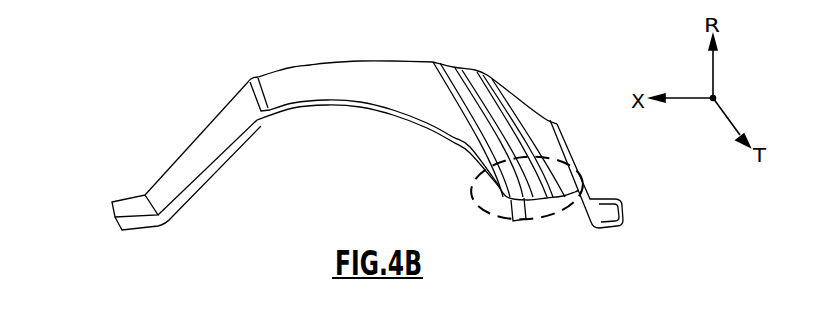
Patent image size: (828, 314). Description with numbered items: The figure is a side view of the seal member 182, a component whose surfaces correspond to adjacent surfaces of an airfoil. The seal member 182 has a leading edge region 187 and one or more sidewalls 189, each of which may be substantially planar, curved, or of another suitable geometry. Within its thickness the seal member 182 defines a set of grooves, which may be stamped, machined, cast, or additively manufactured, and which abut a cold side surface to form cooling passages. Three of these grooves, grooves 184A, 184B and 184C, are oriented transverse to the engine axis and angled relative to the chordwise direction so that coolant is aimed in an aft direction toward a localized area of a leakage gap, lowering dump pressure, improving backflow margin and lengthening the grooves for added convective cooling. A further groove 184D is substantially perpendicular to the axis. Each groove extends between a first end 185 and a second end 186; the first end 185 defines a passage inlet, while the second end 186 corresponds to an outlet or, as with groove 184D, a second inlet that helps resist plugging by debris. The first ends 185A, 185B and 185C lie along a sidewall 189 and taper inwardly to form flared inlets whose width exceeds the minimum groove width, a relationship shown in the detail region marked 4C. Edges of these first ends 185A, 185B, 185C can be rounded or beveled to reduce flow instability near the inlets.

The seal member 182 is at (161, 74).
The groove 184A is at (515, 110).
The groove 184B is at (477, 70).
The groove 184C is at (474, 108).
The groove 184D is at (255, 84).
The first end 185 is at (521, 222).
The first end 185A is at (573, 197).
The first end 185B is at (543, 203).
The first end 185C is at (486, 210).
The second end 186 is at (434, 60).
The leading edge region 187 is at (579, 164).
The sidewall 189 is at (115, 218).
The detail view region 4C is at (477, 181).